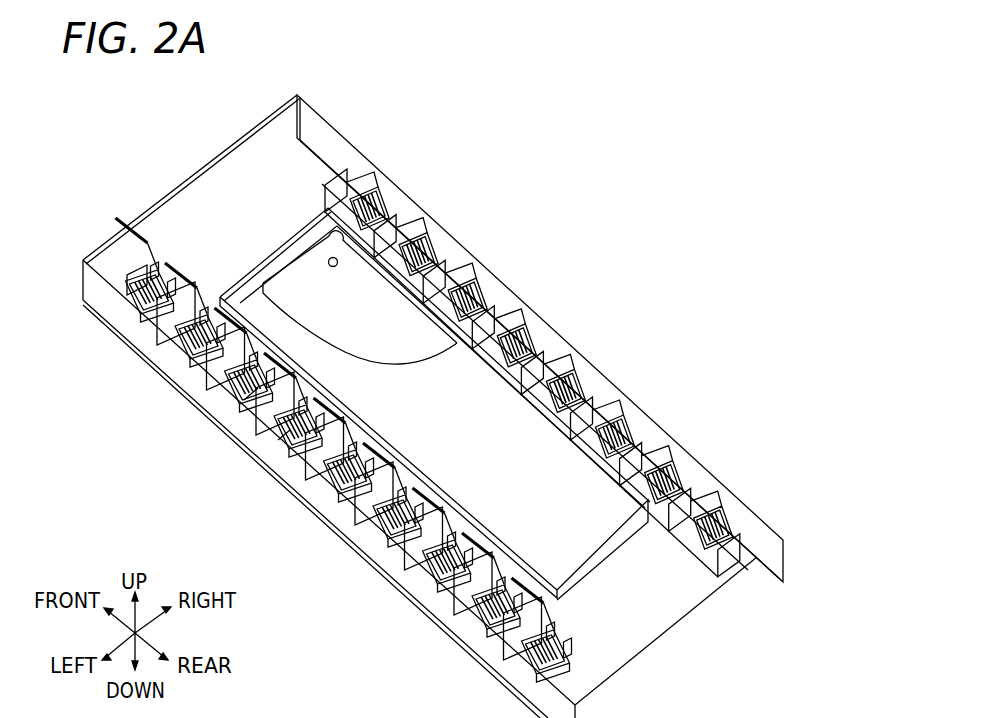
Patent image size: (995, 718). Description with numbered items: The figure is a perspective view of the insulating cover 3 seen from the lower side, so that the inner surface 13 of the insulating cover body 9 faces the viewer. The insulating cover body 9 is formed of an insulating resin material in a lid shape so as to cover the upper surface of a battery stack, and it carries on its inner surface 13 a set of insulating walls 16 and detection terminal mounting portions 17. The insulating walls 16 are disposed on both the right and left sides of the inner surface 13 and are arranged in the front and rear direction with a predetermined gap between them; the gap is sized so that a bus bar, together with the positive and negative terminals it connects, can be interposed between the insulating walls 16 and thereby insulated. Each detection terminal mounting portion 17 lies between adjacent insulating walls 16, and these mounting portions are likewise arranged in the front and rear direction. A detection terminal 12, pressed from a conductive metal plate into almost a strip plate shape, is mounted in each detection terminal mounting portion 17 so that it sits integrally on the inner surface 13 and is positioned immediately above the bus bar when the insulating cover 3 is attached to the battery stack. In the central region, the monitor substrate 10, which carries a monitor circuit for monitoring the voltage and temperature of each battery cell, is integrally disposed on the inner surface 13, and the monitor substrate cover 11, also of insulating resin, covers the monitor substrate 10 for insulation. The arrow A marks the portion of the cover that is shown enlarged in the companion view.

The insulating cover 3 is at (608, 173).
The insulating cover body 9 is at (335, 123).
The monitor substrate 10 is at (357, 298).
The monitor substrate cover 11 is at (463, 398).
The detection terminal 12 is at (300, 442).
The inner surface 13 is at (200, 213).
The insulating wall 16 is at (252, 410).
The detection terminal mounting portion 17 is at (284, 432).
The arrow A is at (244, 409).